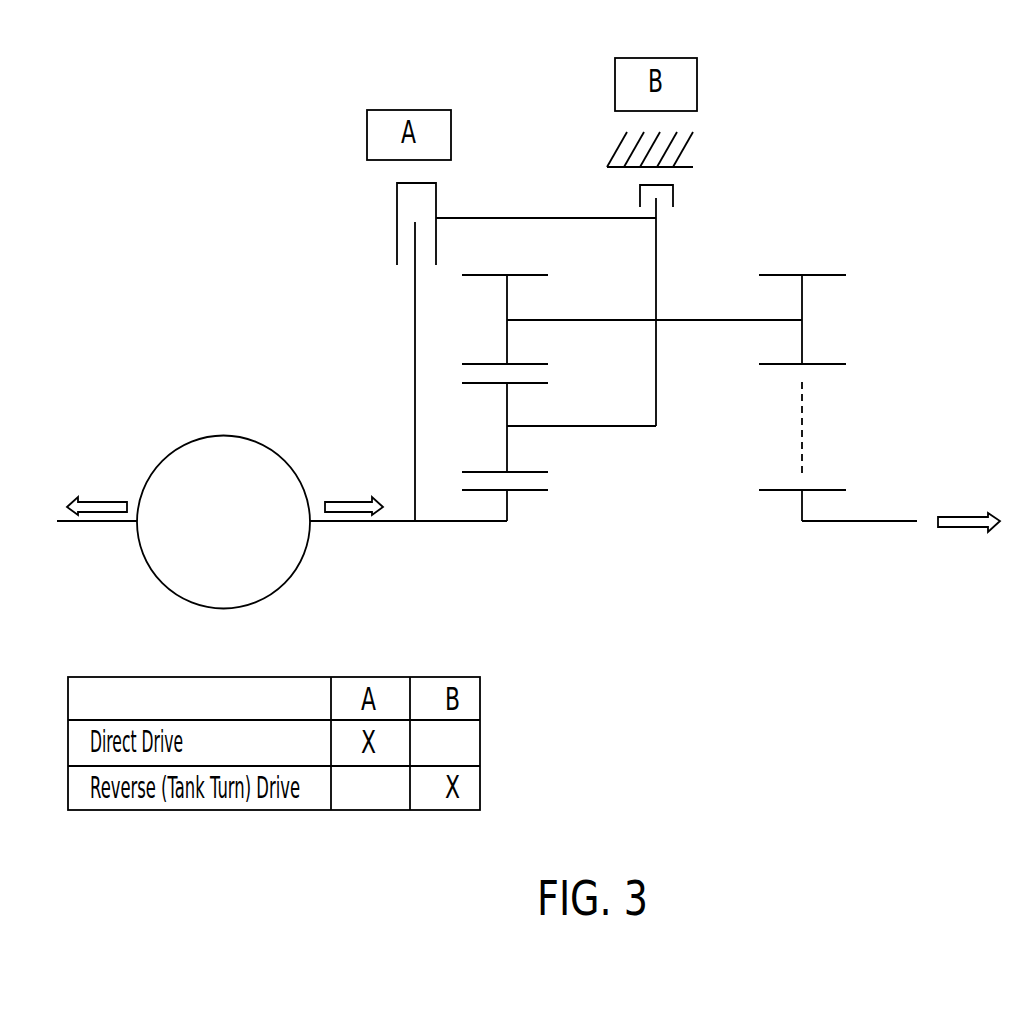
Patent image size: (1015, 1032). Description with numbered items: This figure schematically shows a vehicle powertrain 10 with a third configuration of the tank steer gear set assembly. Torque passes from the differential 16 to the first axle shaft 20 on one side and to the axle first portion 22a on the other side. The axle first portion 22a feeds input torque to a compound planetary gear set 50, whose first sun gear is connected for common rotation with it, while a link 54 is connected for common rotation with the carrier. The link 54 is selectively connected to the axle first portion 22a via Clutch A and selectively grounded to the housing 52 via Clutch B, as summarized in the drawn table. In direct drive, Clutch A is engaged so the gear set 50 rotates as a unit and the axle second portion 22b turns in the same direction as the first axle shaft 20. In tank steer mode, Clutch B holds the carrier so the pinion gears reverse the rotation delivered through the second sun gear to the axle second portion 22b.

The vehicle powertrain 10 is at (150, 102).
The differential 16 is at (223, 436).
The first axle shaft 20 is at (97, 521).
The axle first portion 22a is at (355, 521).
The axle second portion 22b is at (873, 521).
The compound planetary gear set 50 is at (652, 568).
The housing 52 is at (607, 167).
The link 54 is at (535, 218).